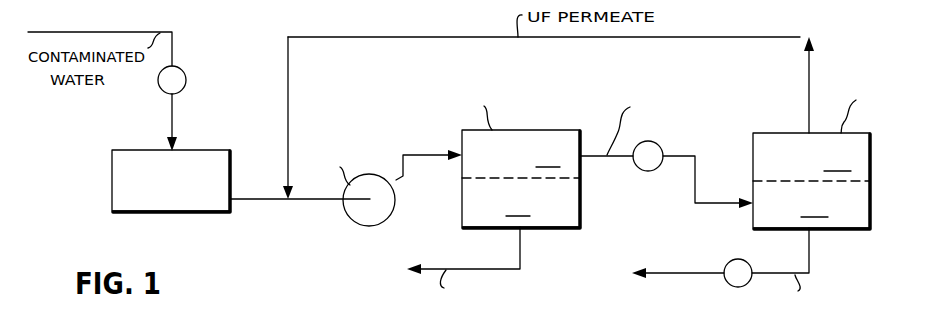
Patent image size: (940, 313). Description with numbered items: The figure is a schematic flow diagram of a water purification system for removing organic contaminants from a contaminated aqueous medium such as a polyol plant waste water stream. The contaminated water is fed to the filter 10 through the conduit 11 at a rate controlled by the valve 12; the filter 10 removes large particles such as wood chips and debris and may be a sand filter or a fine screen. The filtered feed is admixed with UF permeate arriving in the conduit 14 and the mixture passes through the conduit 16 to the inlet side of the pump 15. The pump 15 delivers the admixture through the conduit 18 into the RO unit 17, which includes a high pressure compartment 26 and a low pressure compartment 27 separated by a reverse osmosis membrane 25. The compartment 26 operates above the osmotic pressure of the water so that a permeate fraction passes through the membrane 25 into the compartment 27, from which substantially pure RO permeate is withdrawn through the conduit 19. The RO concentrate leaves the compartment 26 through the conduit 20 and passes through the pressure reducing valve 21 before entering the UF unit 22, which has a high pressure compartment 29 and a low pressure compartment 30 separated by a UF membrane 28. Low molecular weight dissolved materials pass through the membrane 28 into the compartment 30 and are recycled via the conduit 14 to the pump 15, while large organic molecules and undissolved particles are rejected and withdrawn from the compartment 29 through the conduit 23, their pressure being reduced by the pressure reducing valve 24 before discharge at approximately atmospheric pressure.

The filter 10 is at (122, 176).
The conduit 11 is at (174, 115).
The valve 12 is at (185, 74).
The conduit 14 is at (290, 72).
The pump 15 is at (382, 212).
The conduit 16 is at (260, 201).
The RO unit 17 is at (529, 160).
The conduit 18 is at (407, 152).
The conduit 19 is at (521, 246).
The conduit 20 is at (695, 182).
The pressure reducing valve 21 is at (658, 148).
The UF unit 22 is at (831, 159).
The conduit 23 is at (810, 246).
The pressure reducing valve 24 is at (729, 262).
The reverse osmosis membrane 25 is at (504, 178).
The high pressure compartment 26 is at (548, 156).
The low pressure compartment 27 is at (518, 205).
The UF membrane 28 is at (796, 181).
The high pressure compartment 29 is at (814, 206).
The low pressure compartment 30 is at (837, 160).